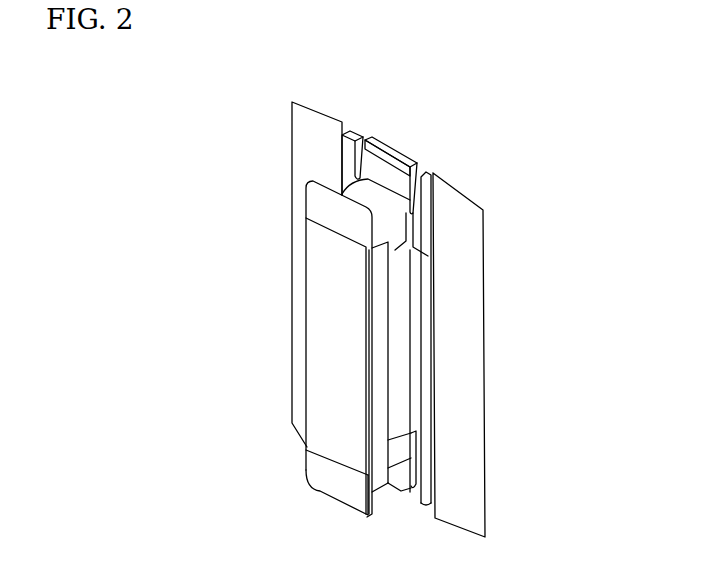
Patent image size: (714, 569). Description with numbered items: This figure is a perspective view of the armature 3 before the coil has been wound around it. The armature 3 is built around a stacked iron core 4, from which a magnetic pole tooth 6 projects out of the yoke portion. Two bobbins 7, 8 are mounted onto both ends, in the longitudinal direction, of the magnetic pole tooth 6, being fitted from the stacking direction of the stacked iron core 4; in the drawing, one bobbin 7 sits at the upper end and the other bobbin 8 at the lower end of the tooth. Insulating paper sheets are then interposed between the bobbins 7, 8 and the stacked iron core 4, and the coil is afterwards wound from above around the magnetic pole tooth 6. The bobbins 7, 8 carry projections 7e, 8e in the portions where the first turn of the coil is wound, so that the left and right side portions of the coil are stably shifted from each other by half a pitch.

The armature 3 is at (323, 403).
The stacked iron core 4 is at (332, 315).
The magnetic pole tooth 6 is at (318, 260).
The bobbin 7 is at (388, 178).
The projection 7e is at (405, 228).
The bobbin 8 is at (327, 467).
The projection 8e is at (416, 452).